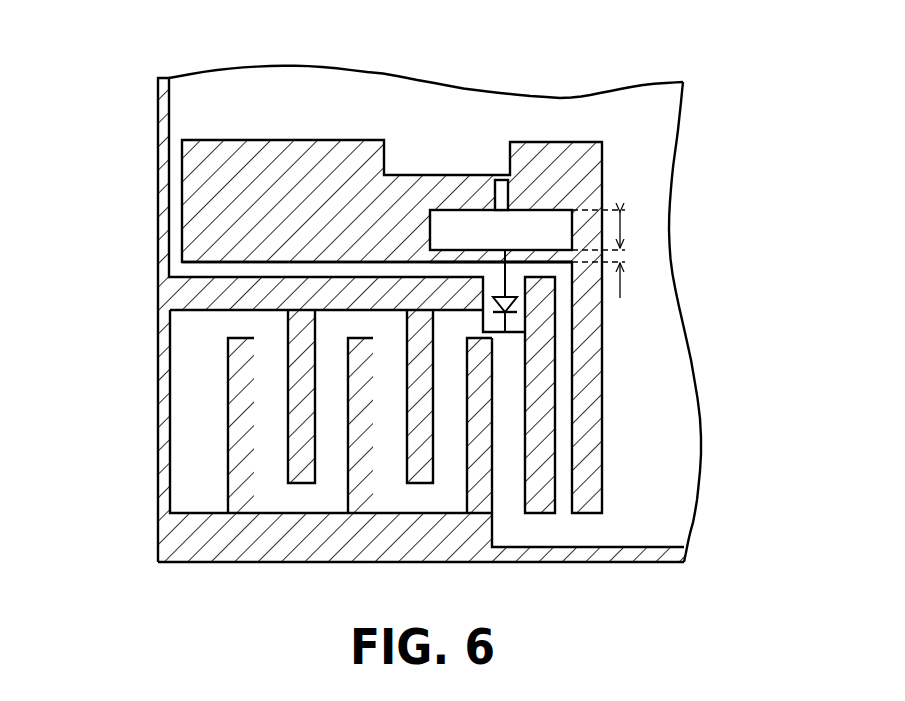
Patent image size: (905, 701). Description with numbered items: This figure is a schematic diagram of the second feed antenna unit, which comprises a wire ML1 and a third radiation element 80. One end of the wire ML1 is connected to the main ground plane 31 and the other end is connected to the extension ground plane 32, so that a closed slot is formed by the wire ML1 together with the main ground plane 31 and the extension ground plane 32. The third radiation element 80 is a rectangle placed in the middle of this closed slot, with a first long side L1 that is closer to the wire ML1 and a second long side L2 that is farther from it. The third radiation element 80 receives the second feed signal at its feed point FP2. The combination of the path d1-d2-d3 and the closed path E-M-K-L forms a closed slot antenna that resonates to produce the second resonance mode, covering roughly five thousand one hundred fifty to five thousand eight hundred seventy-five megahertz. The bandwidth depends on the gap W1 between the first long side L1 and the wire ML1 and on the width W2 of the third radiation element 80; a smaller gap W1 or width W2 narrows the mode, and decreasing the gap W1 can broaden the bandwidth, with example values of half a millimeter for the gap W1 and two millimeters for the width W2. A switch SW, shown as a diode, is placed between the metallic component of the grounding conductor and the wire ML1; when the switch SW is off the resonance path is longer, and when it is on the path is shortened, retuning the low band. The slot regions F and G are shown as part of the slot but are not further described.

The main ground plane 31 is at (320, 100).
The extension ground plane 32 is at (678, 447).
The third radiation element 80 is at (554, 208).
The second long side L2 is at (437, 207).
The feed point FP2 is at (498, 188).
The wire ML1 is at (252, 268).
The first long side L1 is at (427, 257).
The switch SW is at (515, 333).
The width of the third radiation element W2 is at (616, 230).
The gap W1 is at (616, 270).
The closed path point E is at (421, 320).
The closed path point K is at (187, 121).
The closed path point L is at (440, 144).
The node F is at (198, 342).
The node G is at (199, 489).
The closed path point M is at (504, 266).
The path segment d1 is at (500, 232).
The path segment d2 is at (550, 232).
The path segment d3 is at (459, 232).